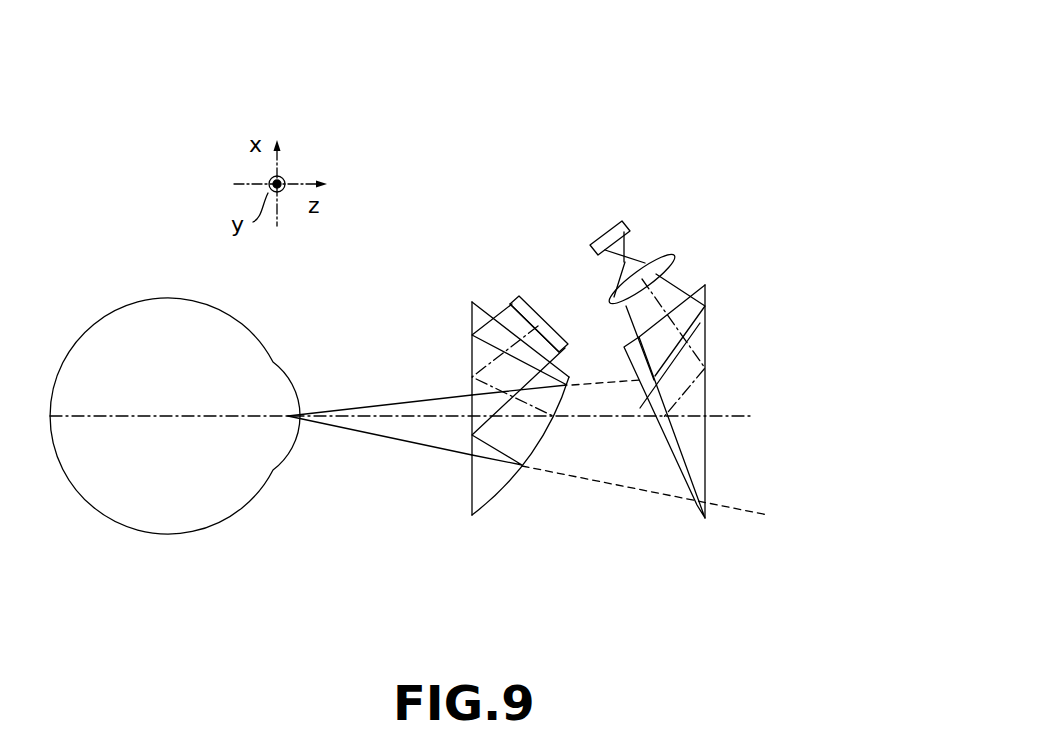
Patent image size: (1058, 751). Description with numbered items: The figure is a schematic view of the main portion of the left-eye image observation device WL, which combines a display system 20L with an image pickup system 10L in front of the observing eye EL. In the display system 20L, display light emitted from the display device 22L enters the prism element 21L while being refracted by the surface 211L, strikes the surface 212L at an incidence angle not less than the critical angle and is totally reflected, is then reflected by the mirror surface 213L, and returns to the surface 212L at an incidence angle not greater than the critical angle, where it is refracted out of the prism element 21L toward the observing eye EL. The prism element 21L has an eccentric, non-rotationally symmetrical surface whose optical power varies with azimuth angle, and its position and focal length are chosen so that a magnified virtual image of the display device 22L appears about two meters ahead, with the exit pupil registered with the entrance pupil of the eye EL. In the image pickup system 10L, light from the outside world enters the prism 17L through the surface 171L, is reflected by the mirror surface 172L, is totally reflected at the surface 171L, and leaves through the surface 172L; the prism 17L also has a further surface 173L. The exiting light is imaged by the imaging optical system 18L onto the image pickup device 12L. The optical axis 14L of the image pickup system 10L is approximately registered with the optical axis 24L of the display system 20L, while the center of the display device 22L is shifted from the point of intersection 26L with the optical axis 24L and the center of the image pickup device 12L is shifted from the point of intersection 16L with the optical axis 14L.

The observing eye EL is at (183, 360).
The optical axis 24L is at (372, 433).
The display system 20L is at (383, 188).
The prism element 21L is at (467, 420).
The surface 211L is at (484, 304).
The surface 212L is at (473, 474).
The mirror surface 213L is at (503, 483).
The display device 22L is at (553, 327).
The point of intersection 26L is at (508, 305).
The left-eye image observation device WL is at (546, 142).
The image pickup system 10L is at (793, 162).
The image pickup device 12L is at (623, 219).
The point of intersection 16L is at (607, 220).
The imaging optical system 18L is at (672, 262).
The prism 17L is at (721, 415).
The surface 171L is at (706, 458).
The mirror surface 172L is at (676, 458).
The incident surface of prism 173L is at (697, 289).
The optical axis 14L is at (737, 420).